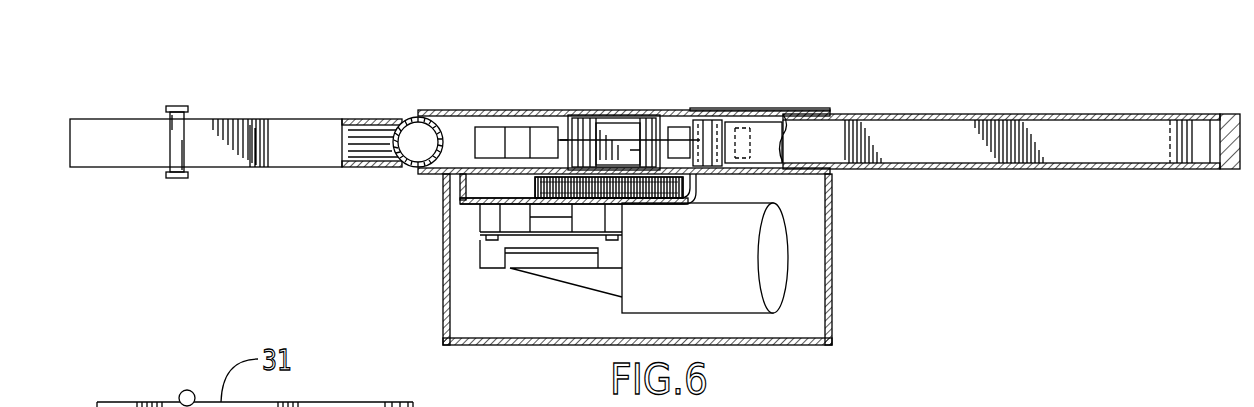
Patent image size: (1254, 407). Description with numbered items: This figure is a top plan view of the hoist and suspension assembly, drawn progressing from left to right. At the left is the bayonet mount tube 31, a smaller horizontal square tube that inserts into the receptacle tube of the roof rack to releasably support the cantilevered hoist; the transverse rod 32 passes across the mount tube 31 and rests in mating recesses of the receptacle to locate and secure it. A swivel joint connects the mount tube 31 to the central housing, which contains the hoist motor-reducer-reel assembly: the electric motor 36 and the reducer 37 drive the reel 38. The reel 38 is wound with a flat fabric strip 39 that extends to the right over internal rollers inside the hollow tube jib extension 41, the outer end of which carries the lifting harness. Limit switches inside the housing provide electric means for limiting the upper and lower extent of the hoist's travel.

The bayonet mount tube 31 is at (288, 118).
The transverse rod 32 is at (177, 180).
The electric motor 36 is at (788, 265).
The reducer 37 is at (458, 200).
The reel 38 is at (637, 112).
The flat fabric strip 39 is at (1070, 127).
The hollow tube jib extension 41 is at (1210, 113).